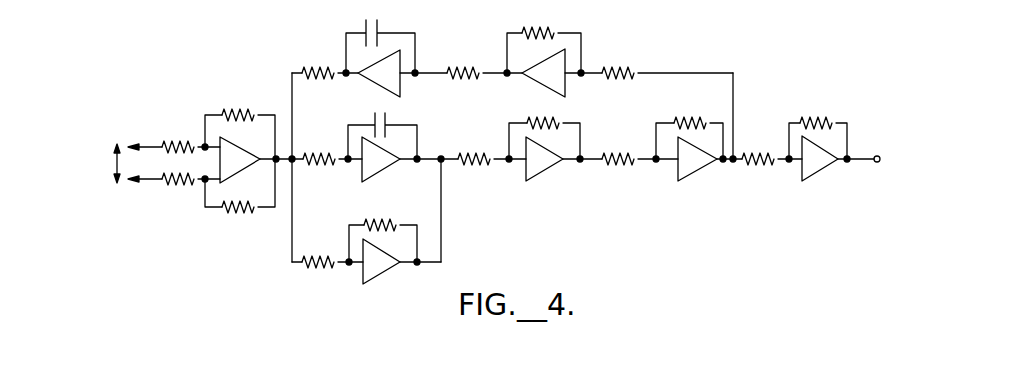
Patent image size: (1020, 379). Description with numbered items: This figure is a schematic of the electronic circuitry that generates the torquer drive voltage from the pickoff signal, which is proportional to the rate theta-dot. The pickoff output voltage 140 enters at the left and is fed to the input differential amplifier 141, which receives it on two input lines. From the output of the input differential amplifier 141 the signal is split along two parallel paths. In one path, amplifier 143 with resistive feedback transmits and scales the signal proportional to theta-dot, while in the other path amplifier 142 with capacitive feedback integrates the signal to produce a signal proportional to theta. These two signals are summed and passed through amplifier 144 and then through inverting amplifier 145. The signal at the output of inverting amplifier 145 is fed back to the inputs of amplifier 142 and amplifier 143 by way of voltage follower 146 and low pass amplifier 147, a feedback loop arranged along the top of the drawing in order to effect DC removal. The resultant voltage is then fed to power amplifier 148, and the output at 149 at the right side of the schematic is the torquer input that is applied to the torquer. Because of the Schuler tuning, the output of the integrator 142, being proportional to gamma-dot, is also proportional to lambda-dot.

The output voltage 140 is at (117, 160).
The input differential amplifier 141 is at (228, 153).
The amplifier 142 is at (362, 166).
The amplifier 143 is at (363, 272).
The amplifier 144 is at (526, 166).
The inverting amplifier 145 is at (678, 168).
The voltage follower 146 is at (540, 80).
The low pass amplifier 147 is at (382, 80).
The power amplifier 148 is at (802, 168).
The output 149 is at (880, 155).